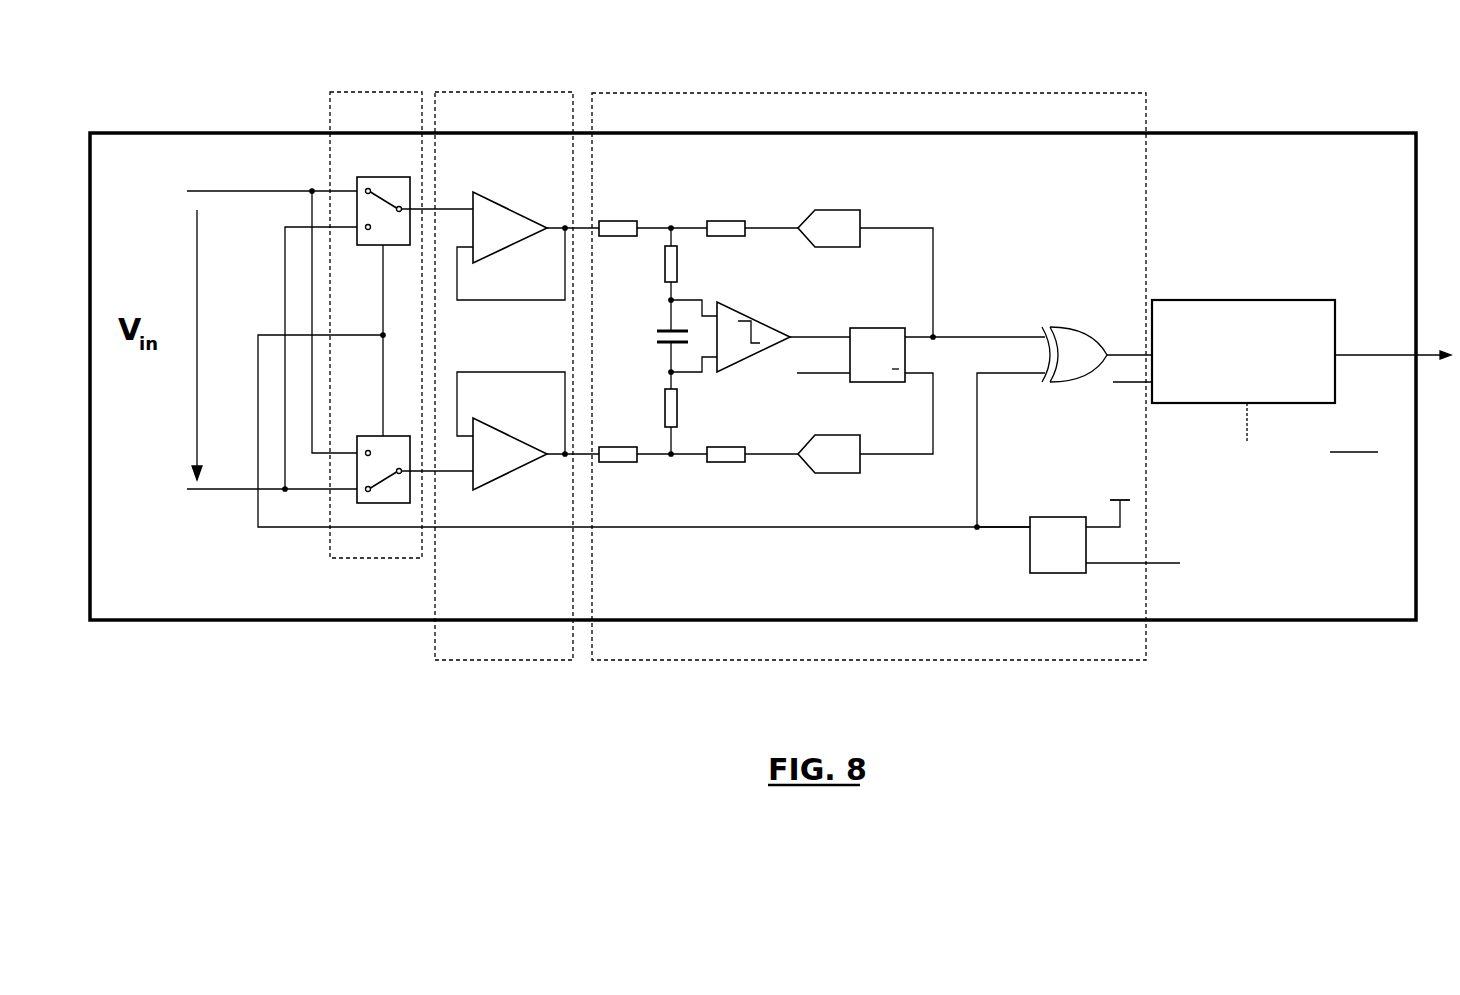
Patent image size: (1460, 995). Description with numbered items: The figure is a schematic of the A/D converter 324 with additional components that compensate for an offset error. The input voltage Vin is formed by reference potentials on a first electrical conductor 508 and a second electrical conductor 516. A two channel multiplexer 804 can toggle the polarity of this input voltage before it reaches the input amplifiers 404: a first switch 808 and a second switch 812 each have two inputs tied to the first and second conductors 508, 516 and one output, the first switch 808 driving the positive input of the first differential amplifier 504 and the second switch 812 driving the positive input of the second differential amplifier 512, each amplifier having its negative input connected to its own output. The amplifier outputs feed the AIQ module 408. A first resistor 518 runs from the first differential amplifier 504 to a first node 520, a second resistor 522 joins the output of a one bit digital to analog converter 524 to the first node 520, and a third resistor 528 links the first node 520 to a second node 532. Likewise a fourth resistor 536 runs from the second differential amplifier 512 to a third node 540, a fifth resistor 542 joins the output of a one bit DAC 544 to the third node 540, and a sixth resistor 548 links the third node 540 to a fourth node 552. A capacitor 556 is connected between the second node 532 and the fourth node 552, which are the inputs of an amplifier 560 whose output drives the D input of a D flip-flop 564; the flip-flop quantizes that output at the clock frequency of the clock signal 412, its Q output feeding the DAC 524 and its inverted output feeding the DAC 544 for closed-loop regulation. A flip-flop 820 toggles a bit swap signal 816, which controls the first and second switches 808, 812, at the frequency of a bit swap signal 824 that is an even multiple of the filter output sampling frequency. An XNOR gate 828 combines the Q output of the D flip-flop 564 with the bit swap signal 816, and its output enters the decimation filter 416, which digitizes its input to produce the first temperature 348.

The A/D converter 324 is at (1275, 133).
The two channel multiplexer 804 is at (384, 92).
The input amplifiers 404 is at (508, 92).
The AIQ module 408 is at (868, 93).
The first electrical conductor 508 is at (235, 191).
The second electrical conductor 516 is at (226, 489).
The first switch 808 is at (385, 177).
The second switch 812 is at (388, 503).
The first differential amplifier 504 is at (500, 210).
The second differential amplifier 512 is at (505, 425).
The first resistor 518 is at (612, 236).
The first node 520 is at (670, 228).
The second resistor 522 is at (736, 236).
The third resistor 528 is at (664, 282).
The second node 532 is at (668, 301).
The capacitor 556 is at (657, 335).
The fourth node 552 is at (668, 372).
The sixth resistor 548 is at (664, 402).
The fourth resistor 536 is at (612, 447).
The third node 540 is at (670, 458).
The fifth resistor 542 is at (736, 447).
The amplifier 560 is at (746, 304).
The 1 bit digital to analog converter 524 is at (845, 210).
The 1 bit DAC 544 is at (845, 435).
The D flip-flop 564 is at (858, 328).
The clock signal 412 is at (836, 373).
The XNOR gate 828 is at (1056, 327).
The decimation filter 416 is at (1242, 300).
The first temperature 348 is at (1355, 358).
The bit swap signal 816 is at (975, 526).
The flip-flop 820 is at (1050, 517).
The bit swap signal 824 is at (1132, 563).